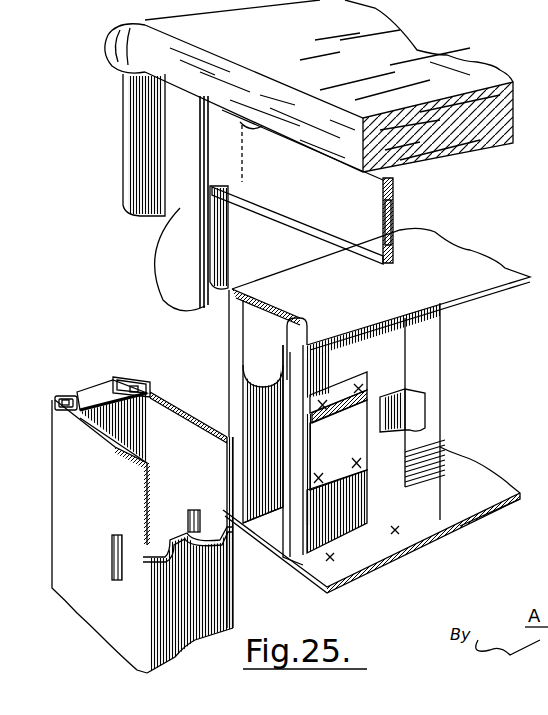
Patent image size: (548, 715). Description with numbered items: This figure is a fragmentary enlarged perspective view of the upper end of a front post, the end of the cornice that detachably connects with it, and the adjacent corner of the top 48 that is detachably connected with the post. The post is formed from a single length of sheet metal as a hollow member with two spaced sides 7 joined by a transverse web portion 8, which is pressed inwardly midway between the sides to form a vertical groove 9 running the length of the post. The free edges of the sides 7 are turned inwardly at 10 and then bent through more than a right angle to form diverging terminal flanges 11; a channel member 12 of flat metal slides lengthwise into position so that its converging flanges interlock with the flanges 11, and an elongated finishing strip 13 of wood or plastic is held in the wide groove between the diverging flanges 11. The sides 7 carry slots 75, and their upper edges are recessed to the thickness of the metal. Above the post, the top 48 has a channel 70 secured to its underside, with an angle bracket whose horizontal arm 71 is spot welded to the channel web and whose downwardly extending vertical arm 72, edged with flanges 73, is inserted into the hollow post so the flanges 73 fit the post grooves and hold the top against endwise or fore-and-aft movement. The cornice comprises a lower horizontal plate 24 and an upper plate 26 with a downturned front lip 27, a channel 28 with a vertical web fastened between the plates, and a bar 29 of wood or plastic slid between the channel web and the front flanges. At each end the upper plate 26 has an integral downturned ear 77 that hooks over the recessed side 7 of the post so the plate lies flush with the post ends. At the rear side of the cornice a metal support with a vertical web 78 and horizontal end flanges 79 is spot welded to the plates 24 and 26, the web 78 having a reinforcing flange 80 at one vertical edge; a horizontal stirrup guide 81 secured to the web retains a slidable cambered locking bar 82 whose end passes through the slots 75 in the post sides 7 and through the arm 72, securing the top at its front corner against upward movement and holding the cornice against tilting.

The top 48 is at (390, 37).
The flanges 73 is at (128, 152).
The vertical arm 72 is at (162, 238).
The channel 70 is at (395, 203).
The horizontal arm 71 is at (372, 222).
The upper plate 26 is at (462, 260).
The downturned ear 77 is at (262, 353).
The downturned lip 27 is at (227, 308).
The bar 29 is at (233, 342).
The channel member 12 is at (128, 420).
The finishing strip 13 is at (92, 392).
The inturned edges 10 is at (63, 398).
The terminal flanges 11 is at (67, 405).
The sides 7 is at (197, 443).
The transverse web portion 8 is at (143, 625).
The vertical groove 9 is at (182, 533).
The slots 75 is at (193, 510).
The channel 28 is at (428, 360).
The flange 80 is at (287, 513).
The stirrup guide 81 is at (373, 452).
The locking bar 82 is at (410, 392).
The vertical web 78 is at (398, 448).
The lower horizontal plate 24 is at (475, 480).
The horizontal end flanges 79 is at (367, 543).